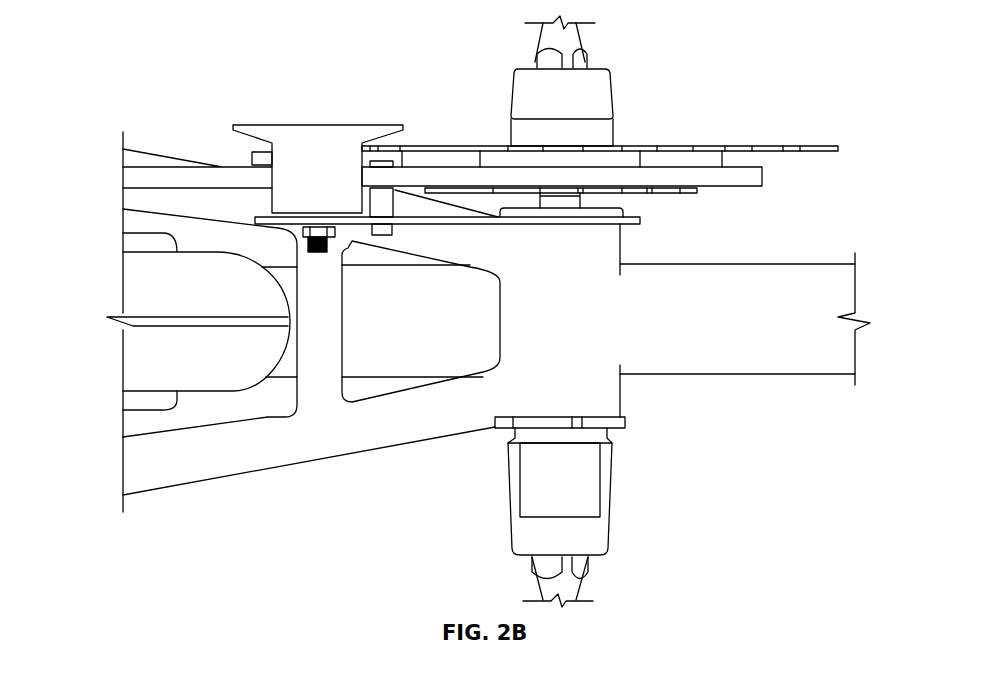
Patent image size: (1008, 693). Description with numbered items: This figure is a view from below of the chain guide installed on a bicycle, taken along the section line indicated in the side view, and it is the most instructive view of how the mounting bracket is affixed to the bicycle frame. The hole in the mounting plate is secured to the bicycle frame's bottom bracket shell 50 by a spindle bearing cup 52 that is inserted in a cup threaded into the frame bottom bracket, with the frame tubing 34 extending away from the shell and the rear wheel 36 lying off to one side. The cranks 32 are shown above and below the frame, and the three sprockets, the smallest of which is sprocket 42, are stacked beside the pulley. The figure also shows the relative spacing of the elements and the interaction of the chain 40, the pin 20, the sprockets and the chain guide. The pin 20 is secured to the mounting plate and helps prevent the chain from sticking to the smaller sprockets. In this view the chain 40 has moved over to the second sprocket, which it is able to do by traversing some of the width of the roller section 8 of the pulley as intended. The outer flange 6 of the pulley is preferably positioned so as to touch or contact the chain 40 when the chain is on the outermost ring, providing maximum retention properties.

The outer flange 6 is at (272, 182).
The roller section 8 is at (403, 127).
The pin 20 is at (405, 196).
The cranks 32 is at (612, 93).
The frame tubing 34 is at (743, 374).
The rear wheel 36 is at (112, 367).
The chain 40 is at (762, 175).
The smallest sprocket 42 is at (594, 205).
The bottom bracket shell 50 is at (613, 243).
The spindle bearing cup 52 is at (643, 221).